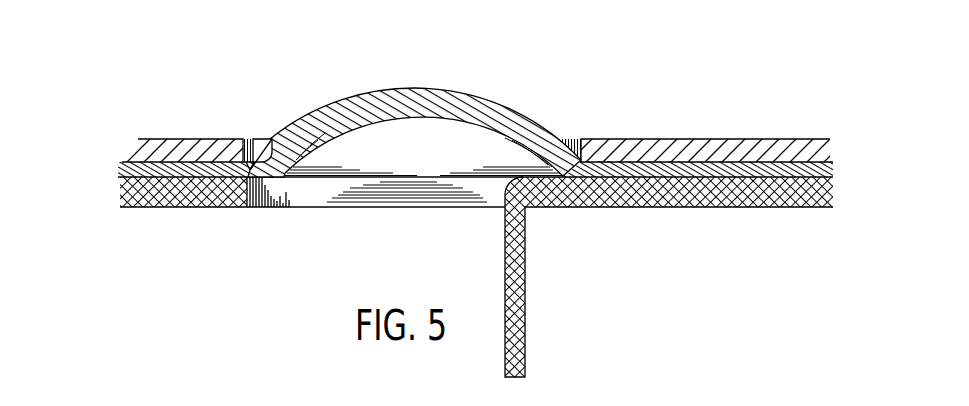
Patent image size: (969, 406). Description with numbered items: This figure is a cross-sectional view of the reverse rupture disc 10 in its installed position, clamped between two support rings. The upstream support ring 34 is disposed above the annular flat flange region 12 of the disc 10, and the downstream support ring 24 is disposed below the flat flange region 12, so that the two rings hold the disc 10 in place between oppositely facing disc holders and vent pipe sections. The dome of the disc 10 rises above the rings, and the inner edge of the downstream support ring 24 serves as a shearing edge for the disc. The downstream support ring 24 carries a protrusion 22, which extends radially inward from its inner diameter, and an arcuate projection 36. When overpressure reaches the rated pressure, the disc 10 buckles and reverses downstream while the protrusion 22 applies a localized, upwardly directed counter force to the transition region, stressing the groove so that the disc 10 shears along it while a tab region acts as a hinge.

The reverse rupture disc 10 is at (477, 85).
The annular flat flange region 12 is at (677, 168).
The protrusion 22 is at (248, 185).
The downstream support ring 24 is at (173, 193).
The upstream support ring 34 is at (155, 152).
The arcuate projection 36 is at (518, 279).